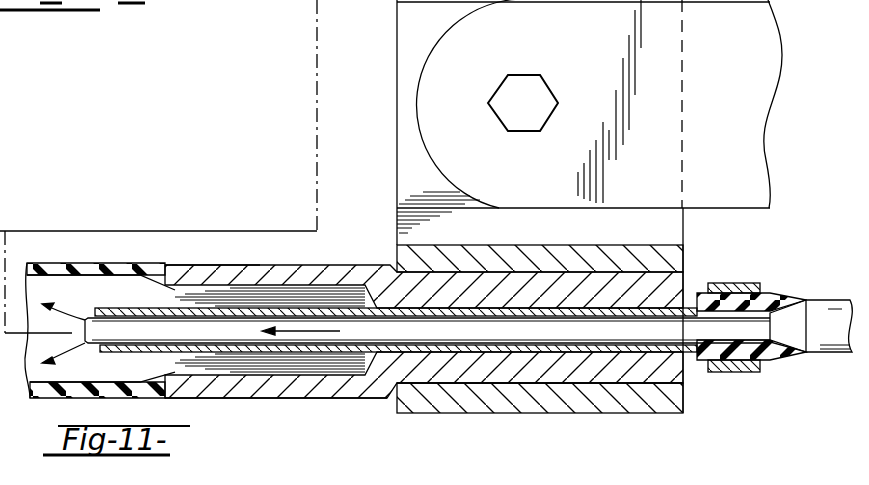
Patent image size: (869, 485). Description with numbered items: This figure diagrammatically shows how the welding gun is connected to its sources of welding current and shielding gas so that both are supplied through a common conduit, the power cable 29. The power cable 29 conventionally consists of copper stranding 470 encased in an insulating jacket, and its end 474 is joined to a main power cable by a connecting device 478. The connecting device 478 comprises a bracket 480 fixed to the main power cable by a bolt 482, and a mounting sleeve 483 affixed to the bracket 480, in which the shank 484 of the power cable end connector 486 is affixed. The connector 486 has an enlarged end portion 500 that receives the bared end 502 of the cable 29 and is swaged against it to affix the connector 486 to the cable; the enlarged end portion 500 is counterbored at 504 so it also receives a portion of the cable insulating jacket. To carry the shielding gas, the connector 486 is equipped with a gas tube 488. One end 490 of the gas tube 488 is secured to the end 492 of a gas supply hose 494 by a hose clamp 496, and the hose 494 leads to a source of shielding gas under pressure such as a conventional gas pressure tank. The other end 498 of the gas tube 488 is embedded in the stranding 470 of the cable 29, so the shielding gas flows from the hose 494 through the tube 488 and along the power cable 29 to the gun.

The power cable 29 is at (158, 246).
The end 474 is at (80, 273).
The connecting device 478 is at (345, 140).
The bracket 480 is at (455, 153).
The bolt 482 is at (498, 96).
The mounting sleeve 483 is at (680, 256).
The shank 484 is at (510, 373).
The power cable end connector 486 is at (368, 263).
The gas tube 488 is at (632, 381).
The copper stranding 470 is at (286, 268).
The counterbore 504 is at (199, 266).
The enlarged end portion 500 is at (313, 390).
The bared end 502 is at (369, 376).
The other end 498 is at (86, 343).
The end 490 is at (782, 292).
The hose clamp 496 is at (738, 374).
The end 492 is at (790, 352).
The gas supply hose 494 is at (838, 353).